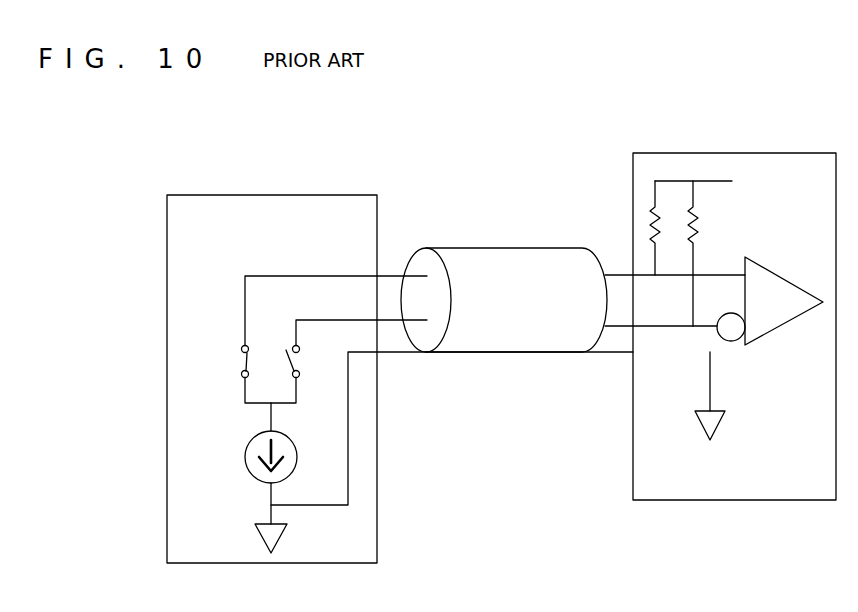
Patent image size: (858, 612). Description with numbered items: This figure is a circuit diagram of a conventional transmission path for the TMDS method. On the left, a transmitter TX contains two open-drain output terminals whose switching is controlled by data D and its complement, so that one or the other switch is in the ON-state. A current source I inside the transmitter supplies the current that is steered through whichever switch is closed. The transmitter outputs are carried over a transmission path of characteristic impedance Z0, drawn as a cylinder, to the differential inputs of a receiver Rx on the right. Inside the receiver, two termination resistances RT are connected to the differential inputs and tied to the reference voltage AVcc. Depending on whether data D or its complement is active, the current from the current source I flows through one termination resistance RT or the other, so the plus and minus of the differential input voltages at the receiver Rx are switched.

The transmitter TX is at (278, 195).
The receiver Rx is at (734, 153).
The current source I is at (245, 457).
The data D is at (318, 347).
The characteristic impedance Z0 is at (504, 300).
The termination resistance RT is at (683, 253).
The reference voltage AVcc is at (698, 173).